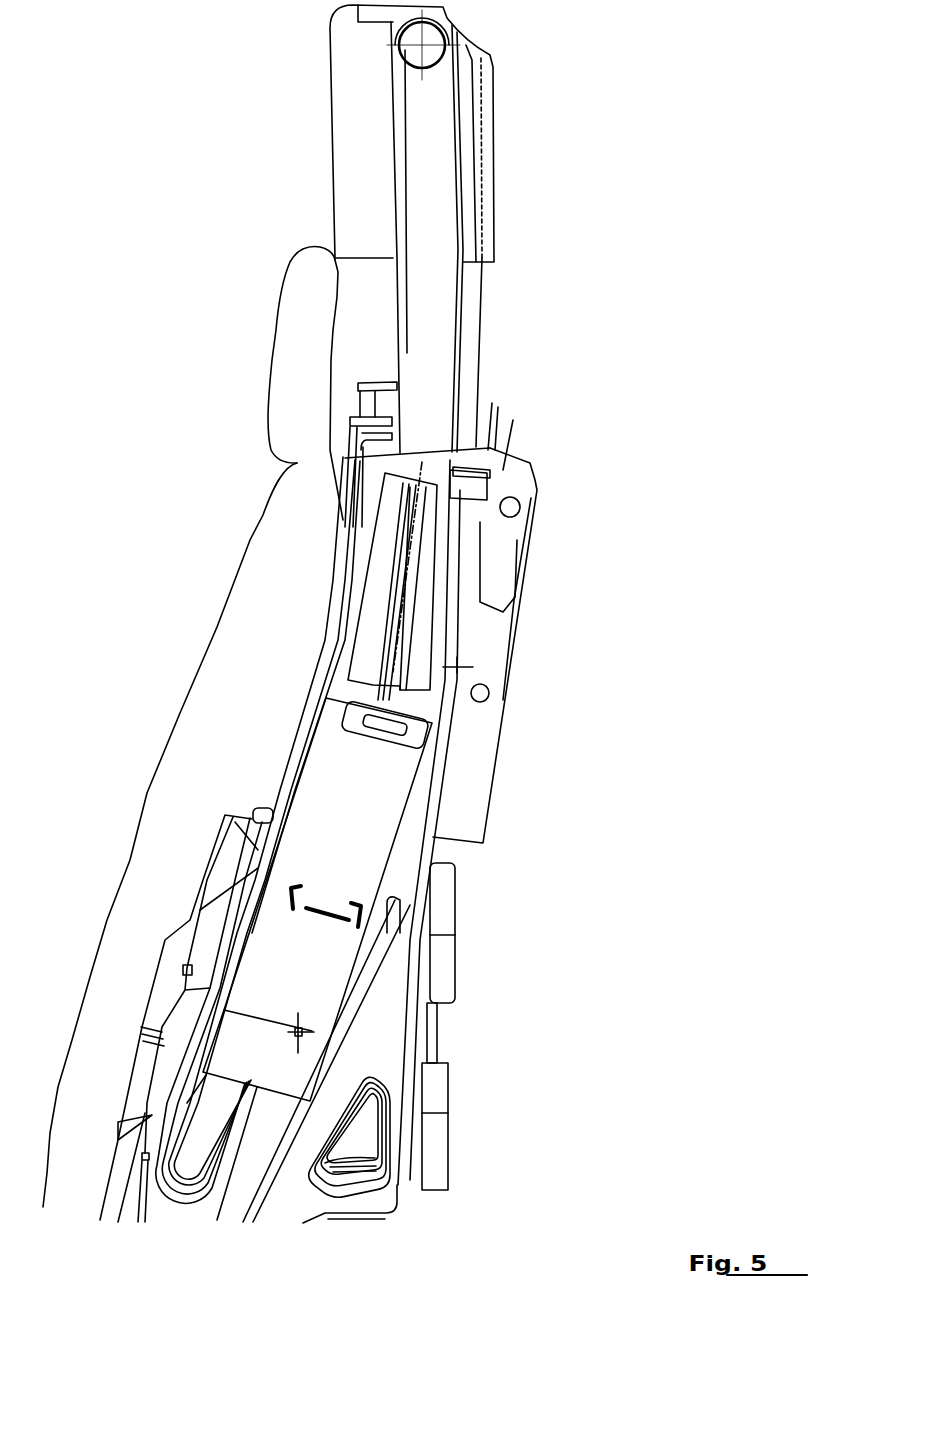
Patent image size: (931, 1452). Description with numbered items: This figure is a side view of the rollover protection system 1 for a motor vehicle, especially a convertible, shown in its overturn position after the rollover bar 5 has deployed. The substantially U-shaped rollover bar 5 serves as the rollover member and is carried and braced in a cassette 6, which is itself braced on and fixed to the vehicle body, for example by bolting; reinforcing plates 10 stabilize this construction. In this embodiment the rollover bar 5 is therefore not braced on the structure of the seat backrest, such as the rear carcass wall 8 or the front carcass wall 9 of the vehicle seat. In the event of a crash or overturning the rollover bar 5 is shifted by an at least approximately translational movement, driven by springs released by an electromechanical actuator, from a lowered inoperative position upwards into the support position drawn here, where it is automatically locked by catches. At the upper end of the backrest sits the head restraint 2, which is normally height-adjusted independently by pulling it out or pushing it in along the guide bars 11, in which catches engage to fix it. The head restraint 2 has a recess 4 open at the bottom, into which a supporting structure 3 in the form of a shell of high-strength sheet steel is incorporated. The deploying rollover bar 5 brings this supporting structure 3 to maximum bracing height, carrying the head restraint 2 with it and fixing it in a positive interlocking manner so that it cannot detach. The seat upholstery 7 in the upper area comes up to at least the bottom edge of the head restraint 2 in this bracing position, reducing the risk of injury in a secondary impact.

The rollover protection system 1 is at (195, 373).
The head restraint 2 is at (350, 103).
The supporting structure 3 is at (487, 180).
The recess 4 is at (401, 197).
The rollover bar 5 is at (450, 310).
The cassette 6 is at (320, 977).
The seat upholstery 7 is at (200, 743).
The rear carcass wall 8 is at (528, 555).
The front carcass wall 9 is at (330, 588).
The reinforcing plates 10 is at (375, 1058).
The guide bars 11 is at (478, 361).